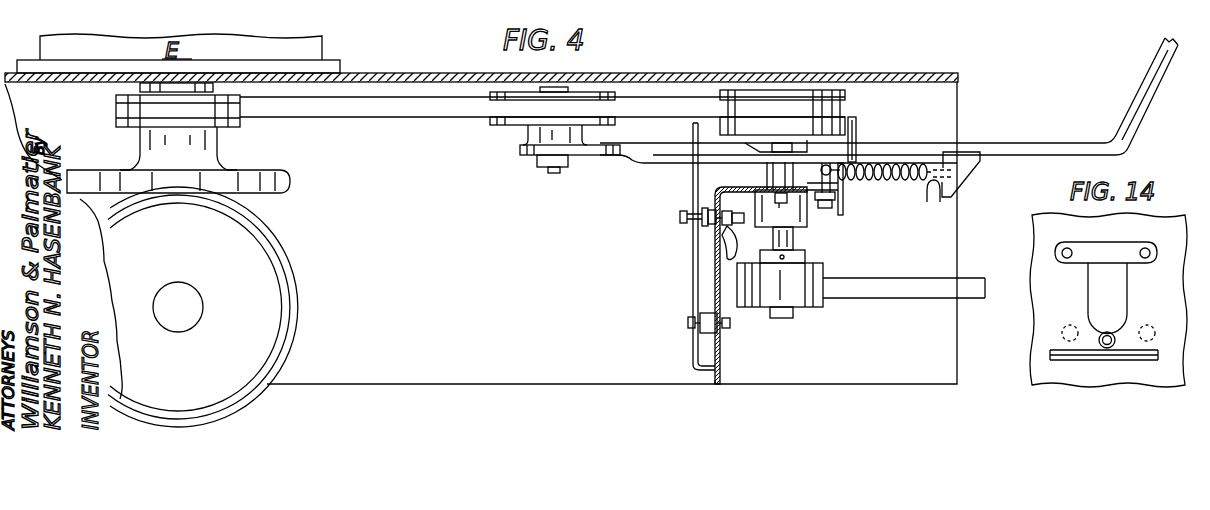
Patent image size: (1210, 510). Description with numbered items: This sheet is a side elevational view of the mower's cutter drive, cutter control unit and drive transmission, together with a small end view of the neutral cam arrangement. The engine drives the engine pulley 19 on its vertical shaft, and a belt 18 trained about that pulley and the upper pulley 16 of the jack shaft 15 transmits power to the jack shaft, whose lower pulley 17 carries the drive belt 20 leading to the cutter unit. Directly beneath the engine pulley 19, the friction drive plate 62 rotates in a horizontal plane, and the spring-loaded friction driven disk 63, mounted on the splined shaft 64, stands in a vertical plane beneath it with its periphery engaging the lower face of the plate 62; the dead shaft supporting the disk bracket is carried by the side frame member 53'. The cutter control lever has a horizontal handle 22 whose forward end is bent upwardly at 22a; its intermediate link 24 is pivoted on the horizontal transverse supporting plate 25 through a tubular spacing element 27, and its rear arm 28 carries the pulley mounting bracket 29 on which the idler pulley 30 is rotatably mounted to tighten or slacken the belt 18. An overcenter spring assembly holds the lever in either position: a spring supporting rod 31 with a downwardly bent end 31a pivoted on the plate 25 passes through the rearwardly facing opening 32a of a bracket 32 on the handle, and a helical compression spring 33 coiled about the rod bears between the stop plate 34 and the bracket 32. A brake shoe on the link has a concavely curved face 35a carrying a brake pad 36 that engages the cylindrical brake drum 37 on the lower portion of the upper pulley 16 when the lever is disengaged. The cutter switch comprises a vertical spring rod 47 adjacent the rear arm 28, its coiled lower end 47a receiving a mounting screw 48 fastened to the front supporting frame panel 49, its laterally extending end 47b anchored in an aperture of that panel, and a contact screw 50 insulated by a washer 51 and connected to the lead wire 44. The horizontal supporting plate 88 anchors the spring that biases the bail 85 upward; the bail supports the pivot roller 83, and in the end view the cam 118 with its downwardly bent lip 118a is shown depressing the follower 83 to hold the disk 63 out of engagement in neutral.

In FIG. 4, the jack shaft 15 is at (797, 240).
In FIG. 4, the upper pulley 16 is at (845, 92).
In FIG. 4, the lower pulley 17 is at (825, 265).
In FIG. 4, the belt 18 is at (400, 112).
In FIG. 4, the engine pulley 19 is at (128, 120).
In FIG. 4, the drive belt 20 is at (886, 288).
In FIG. 4, the handle portion 22 is at (1012, 145).
In FIG. 4, the upwardly bent forward end 22a is at (1150, 77).
In FIG. 4, the intermediate link 24 is at (768, 152).
In FIG. 4, the horizontal transverse supporting plate 25 is at (737, 188).
In FIG. 4, the tubular spacing element 27 is at (780, 175).
In FIG. 4, the rear arm 28 is at (659, 158).
In FIG. 4, the pulley mounting bracket 29 is at (584, 152).
In FIG. 4, the idler pulley 30 is at (513, 125).
In FIG. 4, the spring supporting rod 31 is at (872, 182).
In FIG. 4, the downwardly bent portion 31a is at (818, 185).
In FIG. 4, the bracket 32 is at (960, 165).
In FIG. 4, the rearwardly facing opening 32a is at (936, 202).
In FIG. 4, the helical compression spring 33 is at (906, 181).
In FIG. 4, the stop plate 34 is at (836, 150).
In FIG. 4, the concavely curved face 35a is at (857, 130).
In FIG. 4, the brake pad 36 is at (857, 120).
In FIG. 4, the brake drum 37 is at (786, 133).
In FIG. 4, the lead wire 44 is at (735, 255).
In FIG. 4, the spring rod 47 is at (693, 130).
In FIG. 4, the coiled portion 47a is at (697, 325).
In FIG. 4, the laterally extending portion 47b is at (735, 365).
In FIG. 4, the mounting screw 48 is at (730, 322).
In FIG. 4, the front supporting frame panel 49 is at (715, 280).
In FIG. 4, the contact screw 50 is at (680, 217).
In FIG. 4, the insulating washer 51 is at (715, 226).
In FIG. 4, the side frame member 53' is at (466, 260).
In FIG. 4, the friction drive plate 62 is at (290, 182).
In FIG. 4, the friction driven disk 63 is at (293, 272).
In FIG. 4, the splined shaft 64 is at (192, 262).
In FIG. 4, the horizontal supporting plate 88 is at (760, 73).
In FIG. 14, the cam 118 is at (1110, 226).
In FIG. 14, the downwardly bent lip 118a is at (1098, 300).
In FIG. 14, the pivot roller 83 is at (1112, 345).
In FIG. 14, the bail 85 is at (1092, 358).